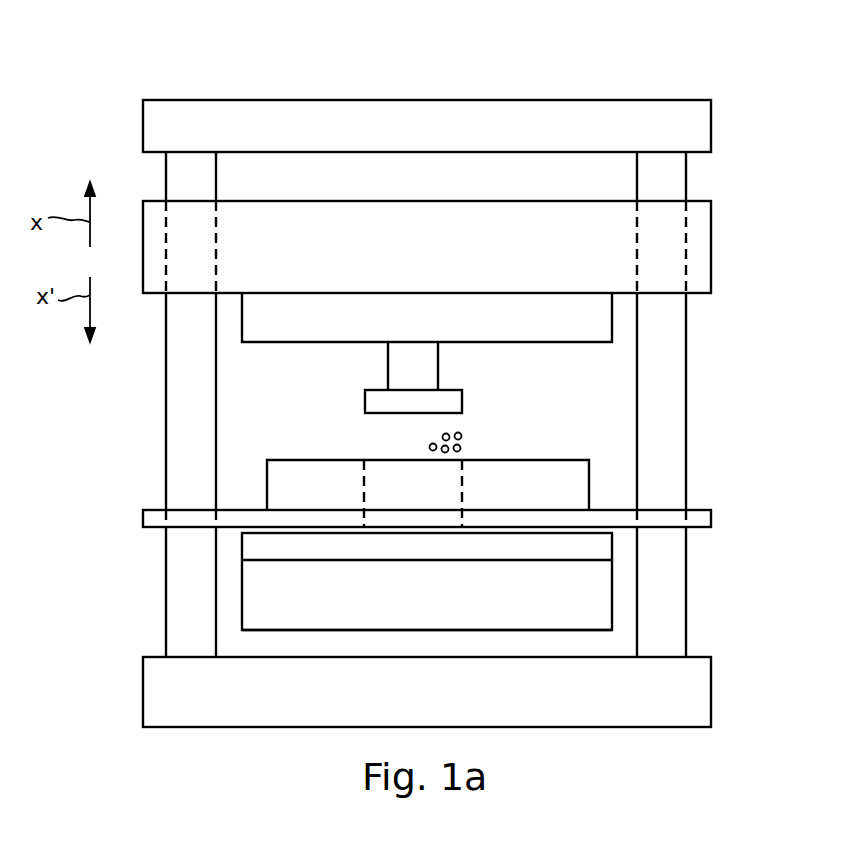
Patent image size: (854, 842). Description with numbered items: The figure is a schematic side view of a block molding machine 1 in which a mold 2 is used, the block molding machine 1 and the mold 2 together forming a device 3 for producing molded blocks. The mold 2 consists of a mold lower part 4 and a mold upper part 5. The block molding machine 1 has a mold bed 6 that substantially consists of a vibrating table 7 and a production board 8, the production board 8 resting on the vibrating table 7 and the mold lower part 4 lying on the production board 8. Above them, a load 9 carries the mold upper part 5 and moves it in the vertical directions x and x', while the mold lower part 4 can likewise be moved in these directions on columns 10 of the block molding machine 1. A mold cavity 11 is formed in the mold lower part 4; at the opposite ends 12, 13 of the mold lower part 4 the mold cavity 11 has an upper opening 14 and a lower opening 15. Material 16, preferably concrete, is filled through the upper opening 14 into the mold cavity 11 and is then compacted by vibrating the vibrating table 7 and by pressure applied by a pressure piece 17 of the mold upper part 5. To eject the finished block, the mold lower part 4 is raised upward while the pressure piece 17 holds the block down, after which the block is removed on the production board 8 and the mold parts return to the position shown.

The block molding machine 1 is at (680, 72).
The mold 2 is at (598, 421).
The device 3 is at (627, 72).
The mold lower part 4 is at (538, 485).
The mold upper part 5 is at (560, 314).
The mold bed 6 is at (624, 580).
The vibrating table 7 is at (552, 612).
The production board 8 is at (553, 548).
The load 9 is at (700, 236).
The columns 10 is at (186, 410).
The mold cavity 11 is at (380, 479).
The end of the mold lower part 12 is at (318, 458).
The end of the mold lower part 13 is at (312, 528).
The upper opening 14 is at (384, 457).
The lower opening 15 is at (388, 530).
The material 16 is at (462, 434).
The pressure piece 17 is at (450, 402).